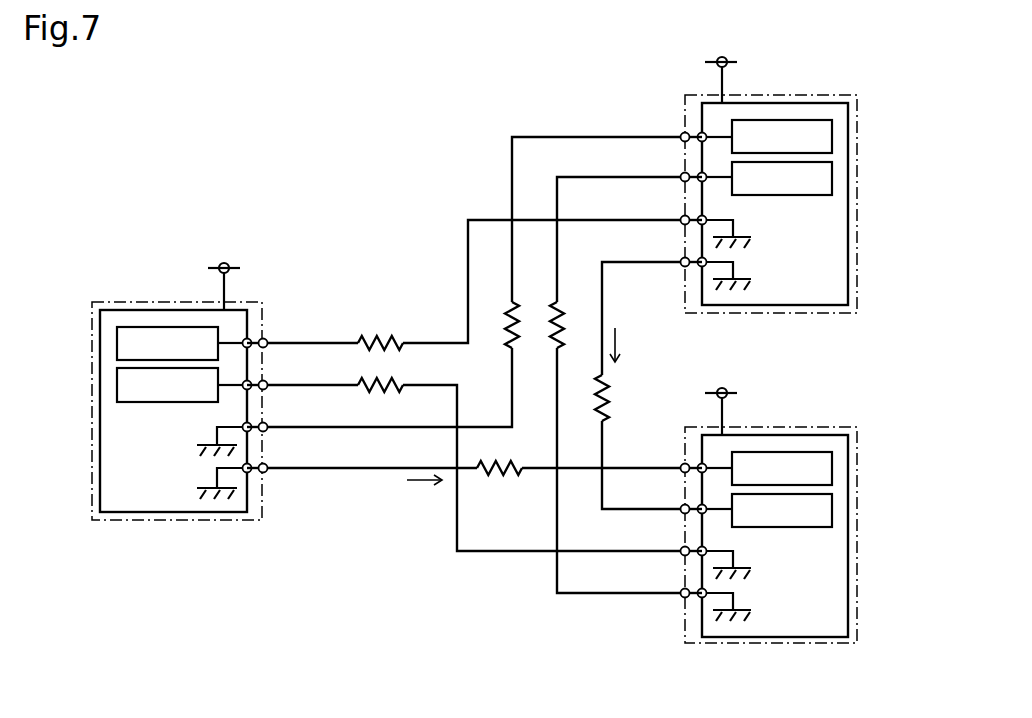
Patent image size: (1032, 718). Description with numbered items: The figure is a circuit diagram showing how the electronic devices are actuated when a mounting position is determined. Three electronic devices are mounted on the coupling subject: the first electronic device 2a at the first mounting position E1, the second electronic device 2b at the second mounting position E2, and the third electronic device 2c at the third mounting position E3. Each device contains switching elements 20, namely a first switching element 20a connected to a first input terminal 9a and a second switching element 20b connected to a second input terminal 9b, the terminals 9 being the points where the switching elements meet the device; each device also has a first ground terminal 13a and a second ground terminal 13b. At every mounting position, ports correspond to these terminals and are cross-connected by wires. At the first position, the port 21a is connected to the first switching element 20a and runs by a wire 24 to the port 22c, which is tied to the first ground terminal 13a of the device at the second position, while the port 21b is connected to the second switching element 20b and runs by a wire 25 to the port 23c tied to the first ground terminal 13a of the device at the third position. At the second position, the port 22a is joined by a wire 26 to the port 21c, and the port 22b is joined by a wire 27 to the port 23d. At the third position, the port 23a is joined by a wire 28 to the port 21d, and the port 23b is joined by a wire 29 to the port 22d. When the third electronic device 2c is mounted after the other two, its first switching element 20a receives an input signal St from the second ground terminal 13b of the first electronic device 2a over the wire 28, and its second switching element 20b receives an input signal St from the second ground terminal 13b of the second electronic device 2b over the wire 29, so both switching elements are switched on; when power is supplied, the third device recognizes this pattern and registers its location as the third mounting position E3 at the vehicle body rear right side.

The first mounting position E1 is at (165, 302).
The second mounting position E2 is at (780, 95).
The third mounting position E3 is at (780, 427).
The first electronic device 2a is at (115, 310).
The second electronic device 2b is at (843, 103).
The third electronic device 2c is at (843, 435).
The terminal 9 is at (475, 290).
The first input terminal 9a is at (250, 338).
The second input terminal 9b is at (250, 380).
The first ground terminal 13a is at (250, 423).
The second ground terminal 13b is at (249, 473).
The switching element 20 is at (475, 345).
The first switching element 20a is at (117, 335).
The second switching element 20b is at (117, 385).
The port 21a is at (266, 338).
The port 21b is at (266, 388).
The port 21c is at (266, 432).
The port 21d is at (266, 472).
The port 22a is at (682, 133).
The port 22b is at (682, 180).
The port 22c is at (683, 224).
The port 22d is at (683, 266).
The port 23a is at (682, 465).
The port 23b is at (682, 512).
The port 23c is at (683, 556).
The port 23d is at (683, 598).
The wire 24 is at (425, 342).
The wire 25 is at (420, 383).
The wire 26 is at (512, 200).
The wire 27 is at (557, 212).
The wire 28 is at (380, 470).
The wire 29 is at (600, 302).
The input signal St is at (420, 485).